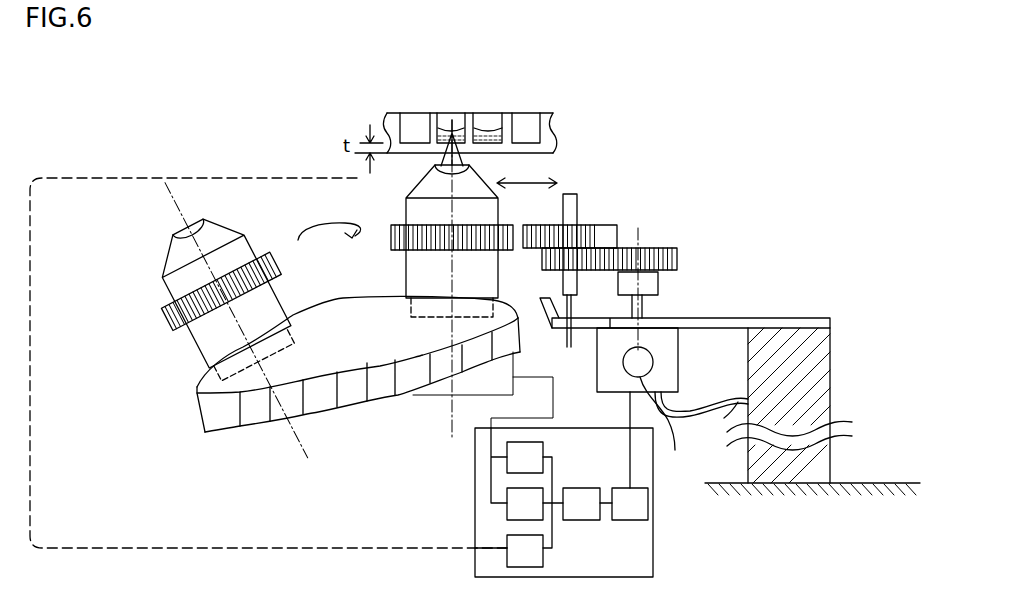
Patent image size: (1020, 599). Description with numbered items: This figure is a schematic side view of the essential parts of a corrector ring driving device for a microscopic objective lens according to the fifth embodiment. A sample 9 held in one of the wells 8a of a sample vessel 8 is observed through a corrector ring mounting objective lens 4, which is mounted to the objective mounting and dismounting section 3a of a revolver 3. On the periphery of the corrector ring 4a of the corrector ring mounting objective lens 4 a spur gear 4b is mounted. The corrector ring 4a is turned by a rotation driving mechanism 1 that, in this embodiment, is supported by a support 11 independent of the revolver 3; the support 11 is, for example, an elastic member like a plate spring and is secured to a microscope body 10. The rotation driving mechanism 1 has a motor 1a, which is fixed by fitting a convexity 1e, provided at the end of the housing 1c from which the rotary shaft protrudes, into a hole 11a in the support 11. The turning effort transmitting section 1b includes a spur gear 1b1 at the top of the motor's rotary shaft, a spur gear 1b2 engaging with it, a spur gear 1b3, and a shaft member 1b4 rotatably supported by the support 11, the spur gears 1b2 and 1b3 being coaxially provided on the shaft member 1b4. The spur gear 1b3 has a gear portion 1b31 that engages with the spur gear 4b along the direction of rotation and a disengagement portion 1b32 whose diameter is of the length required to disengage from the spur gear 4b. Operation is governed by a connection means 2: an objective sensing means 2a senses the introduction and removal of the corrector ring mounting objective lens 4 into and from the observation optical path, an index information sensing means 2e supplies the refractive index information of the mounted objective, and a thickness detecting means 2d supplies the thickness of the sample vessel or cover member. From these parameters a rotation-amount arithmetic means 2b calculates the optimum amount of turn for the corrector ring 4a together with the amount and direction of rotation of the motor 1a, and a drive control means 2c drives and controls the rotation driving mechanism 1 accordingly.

The rotation driving mechanism 1 is at (742, 483).
The motor 1a is at (694, 428).
The turning effort transmitting section 1b is at (718, 283).
The spur gear 1b1 is at (645, 248).
The spur gear 1b2 is at (546, 268).
The spur gear 1b3 is at (605, 223).
The gear portion 1b31 is at (573, 230).
The disengagement portion 1b32 is at (600, 237).
The shaft member 1b4 is at (562, 210).
The housing 1c is at (667, 363).
The convexity 1e is at (655, 322).
The connection means 2 is at (520, 484).
The objective sensing means 2a is at (525, 457).
The rotation-amount arithmetic means 2b is at (581, 504).
The drive control means 2c is at (630, 504).
The thickness detecting means 2d is at (525, 551).
The index information sensing means 2e is at (525, 504).
The revolver 3 is at (203, 387).
The objective mounting and dismounting section 3a is at (410, 308).
The corrector ring mounting objective lens 4 is at (407, 203).
The corrector ring 4a is at (392, 232).
The spur gear 4b is at (282, 275).
The sample vessel 8 is at (478, 107).
The wells 8a is at (428, 128).
The sample 9 is at (462, 125).
The microscope body 10 is at (862, 328).
The support 11 is at (763, 322).
The hole 11a is at (618, 328).